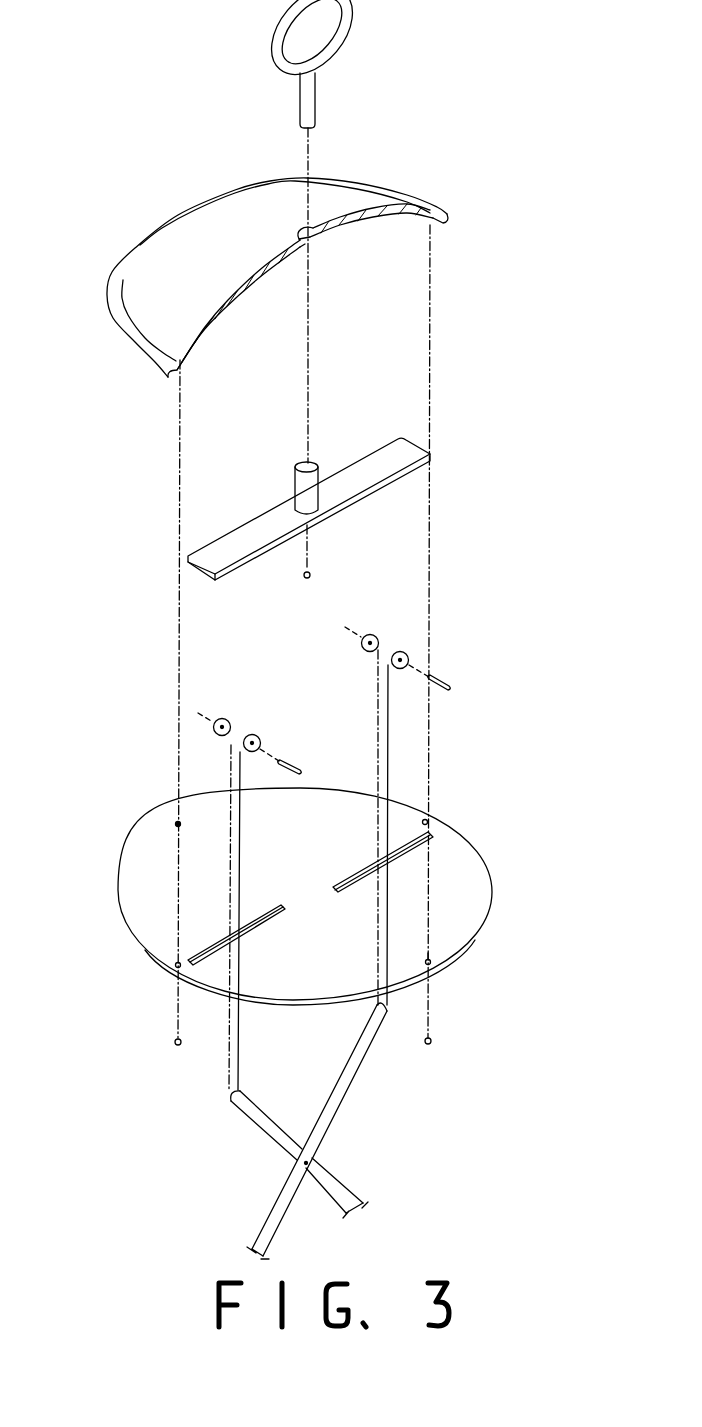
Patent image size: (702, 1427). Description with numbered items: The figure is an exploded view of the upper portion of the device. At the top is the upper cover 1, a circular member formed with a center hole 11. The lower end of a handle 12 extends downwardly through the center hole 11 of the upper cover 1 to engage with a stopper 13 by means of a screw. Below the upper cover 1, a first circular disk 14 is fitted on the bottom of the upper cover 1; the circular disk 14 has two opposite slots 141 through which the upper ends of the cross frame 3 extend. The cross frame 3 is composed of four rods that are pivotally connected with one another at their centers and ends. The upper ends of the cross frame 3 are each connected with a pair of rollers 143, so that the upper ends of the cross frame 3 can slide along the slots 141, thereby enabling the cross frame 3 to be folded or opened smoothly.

The upper cover 1 is at (200, 220).
The center hole 11 is at (310, 243).
The handle 12 is at (345, 13).
The stopper 13 is at (367, 465).
The first circular disk 14 is at (477, 905).
The slot 141 is at (410, 852).
The rollers 143 is at (400, 650).
The cross frame 3 is at (352, 1079).